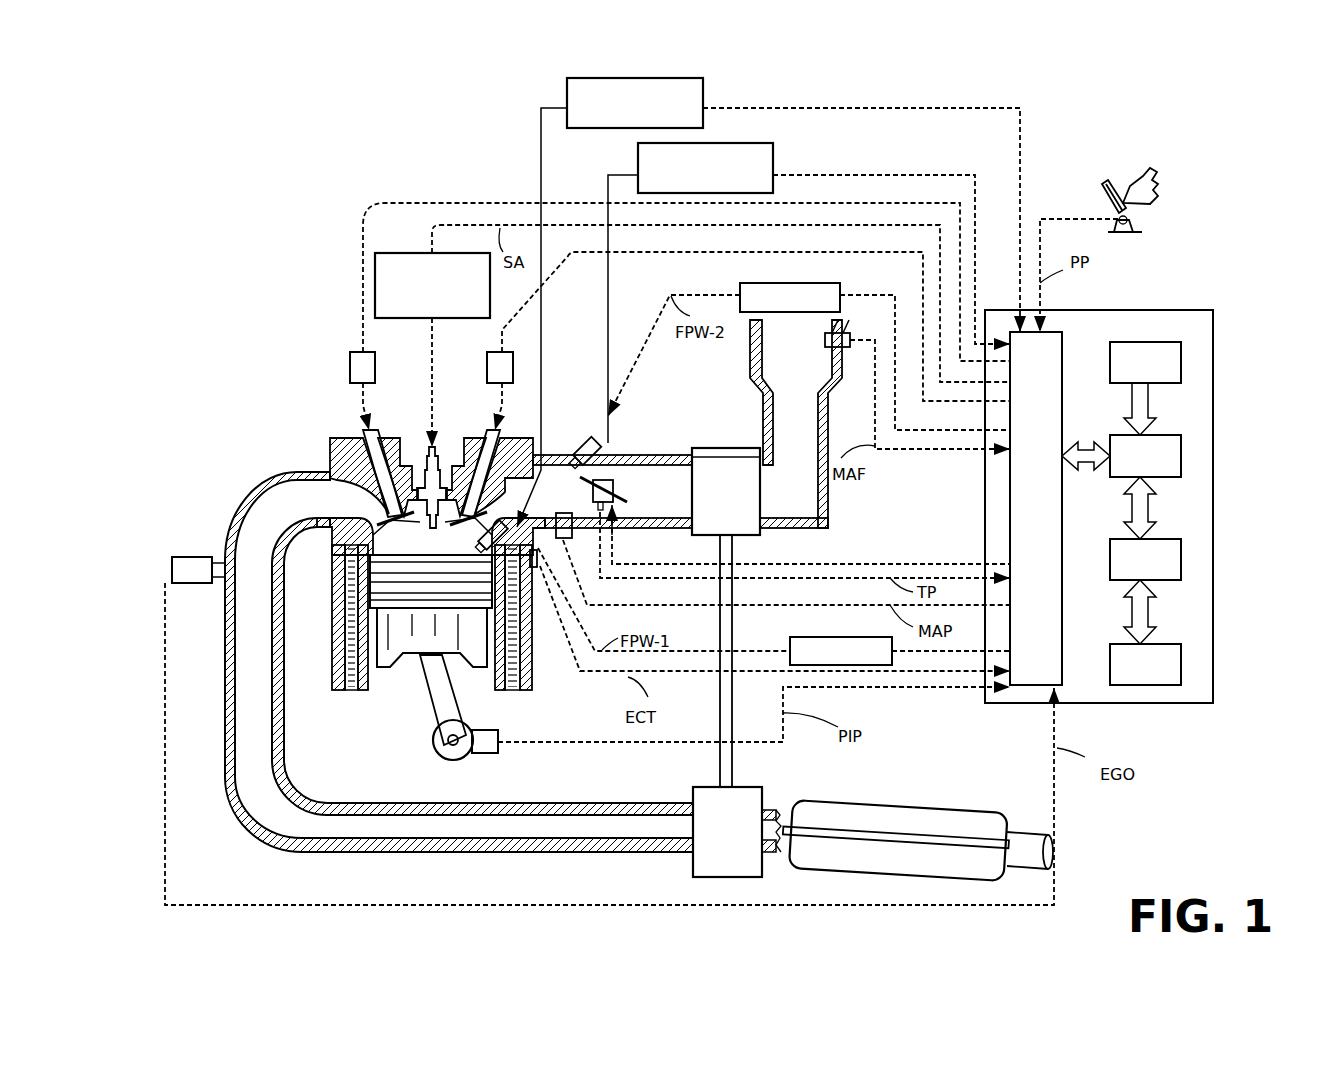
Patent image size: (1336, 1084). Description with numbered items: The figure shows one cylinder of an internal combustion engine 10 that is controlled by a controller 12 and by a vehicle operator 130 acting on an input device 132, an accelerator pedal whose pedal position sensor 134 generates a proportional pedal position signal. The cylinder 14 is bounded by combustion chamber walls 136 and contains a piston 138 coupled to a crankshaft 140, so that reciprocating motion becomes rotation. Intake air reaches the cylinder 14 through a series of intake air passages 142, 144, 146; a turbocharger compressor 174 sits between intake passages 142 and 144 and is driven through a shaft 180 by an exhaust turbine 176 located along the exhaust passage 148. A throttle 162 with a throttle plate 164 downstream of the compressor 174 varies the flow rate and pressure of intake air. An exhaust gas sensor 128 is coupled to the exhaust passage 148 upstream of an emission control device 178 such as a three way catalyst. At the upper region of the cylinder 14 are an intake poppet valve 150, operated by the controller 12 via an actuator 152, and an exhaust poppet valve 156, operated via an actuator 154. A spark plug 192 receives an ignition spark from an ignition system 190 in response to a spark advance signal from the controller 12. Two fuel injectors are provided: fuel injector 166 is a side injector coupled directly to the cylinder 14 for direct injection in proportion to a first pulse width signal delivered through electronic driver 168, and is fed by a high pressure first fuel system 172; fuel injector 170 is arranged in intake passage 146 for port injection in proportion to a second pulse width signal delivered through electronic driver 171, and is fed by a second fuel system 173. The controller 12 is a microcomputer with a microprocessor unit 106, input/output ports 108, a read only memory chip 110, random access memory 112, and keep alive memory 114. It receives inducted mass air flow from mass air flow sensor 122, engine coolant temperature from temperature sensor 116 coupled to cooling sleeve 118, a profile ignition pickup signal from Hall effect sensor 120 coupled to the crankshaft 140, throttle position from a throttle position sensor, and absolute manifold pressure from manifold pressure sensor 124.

The internal combustion engine 10 is at (266, 394).
The controller 12 is at (1213, 312).
The cylinder 14 is at (427, 537).
The microprocessor unit 106 is at (1181, 447).
The input/output ports 108 is at (1064, 334).
The read only memory chip 110 is at (1181, 354).
The random access memory 112 is at (1181, 553).
The keep alive memory 114 is at (1181, 657).
The temperature sensor 116 is at (535, 572).
The cooling sleeve 118 is at (514, 690).
The Hall effect sensor 120 is at (487, 753).
The mass air flow sensor 122 is at (850, 333).
The manifold pressure sensor 124 is at (566, 545).
The exhaust gas sensor 128 is at (172, 558).
The vehicle operator 130 is at (1153, 183).
The input device 132 is at (1103, 197).
The pedal position sensor 134 is at (1137, 218).
The combustion chamber walls 136 is at (368, 690).
The piston 138 is at (413, 637).
The crankshaft 140 is at (440, 757).
The intake air passage 142 is at (796, 424).
The intake air passage 144 is at (737, 505).
The intake air passage 146 is at (612, 491).
The exhaust passage 148 is at (459, 662).
The intake poppet valve 150 is at (463, 512).
The actuator 152 is at (487, 368).
The actuator 154 is at (352, 354).
The exhaust poppet valve 156 is at (395, 515).
The throttle 162 is at (604, 480).
The throttle plate 164 is at (582, 478).
The fuel injector 166 is at (497, 525).
The electronic driver 168 is at (794, 637).
The fuel injector 170 is at (590, 445).
The electronic driver 171 is at (743, 282).
The fuel system-1 172 is at (667, 79).
The fuel system-2 173 is at (765, 142).
The compressor 174 is at (700, 448).
The exhaust turbine 176 is at (693, 860).
The emission control device 178 is at (963, 808).
The shaft 180 is at (726, 750).
The ignition system 190 is at (392, 253).
The spark plug 192 is at (427, 448).